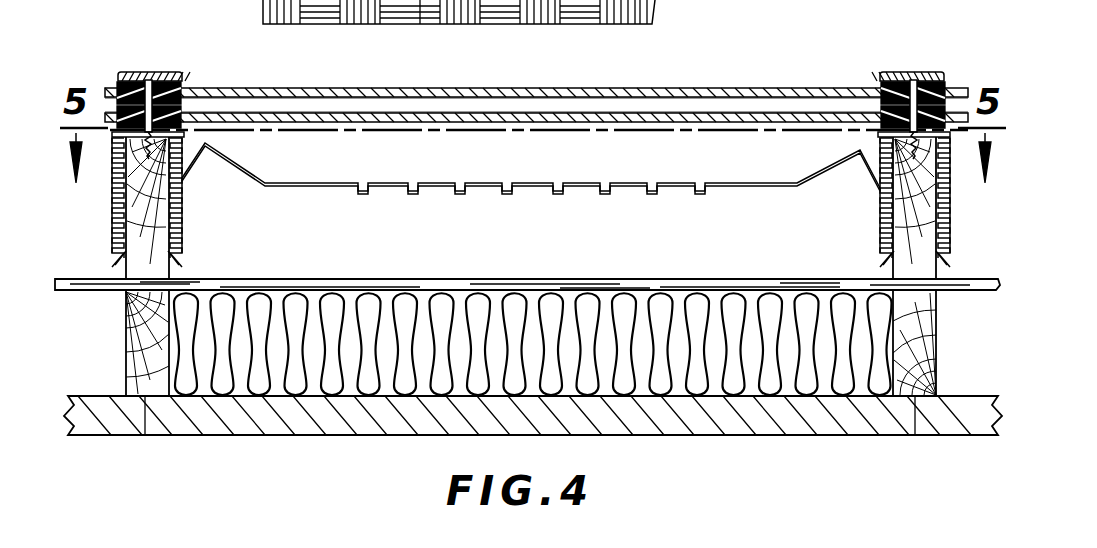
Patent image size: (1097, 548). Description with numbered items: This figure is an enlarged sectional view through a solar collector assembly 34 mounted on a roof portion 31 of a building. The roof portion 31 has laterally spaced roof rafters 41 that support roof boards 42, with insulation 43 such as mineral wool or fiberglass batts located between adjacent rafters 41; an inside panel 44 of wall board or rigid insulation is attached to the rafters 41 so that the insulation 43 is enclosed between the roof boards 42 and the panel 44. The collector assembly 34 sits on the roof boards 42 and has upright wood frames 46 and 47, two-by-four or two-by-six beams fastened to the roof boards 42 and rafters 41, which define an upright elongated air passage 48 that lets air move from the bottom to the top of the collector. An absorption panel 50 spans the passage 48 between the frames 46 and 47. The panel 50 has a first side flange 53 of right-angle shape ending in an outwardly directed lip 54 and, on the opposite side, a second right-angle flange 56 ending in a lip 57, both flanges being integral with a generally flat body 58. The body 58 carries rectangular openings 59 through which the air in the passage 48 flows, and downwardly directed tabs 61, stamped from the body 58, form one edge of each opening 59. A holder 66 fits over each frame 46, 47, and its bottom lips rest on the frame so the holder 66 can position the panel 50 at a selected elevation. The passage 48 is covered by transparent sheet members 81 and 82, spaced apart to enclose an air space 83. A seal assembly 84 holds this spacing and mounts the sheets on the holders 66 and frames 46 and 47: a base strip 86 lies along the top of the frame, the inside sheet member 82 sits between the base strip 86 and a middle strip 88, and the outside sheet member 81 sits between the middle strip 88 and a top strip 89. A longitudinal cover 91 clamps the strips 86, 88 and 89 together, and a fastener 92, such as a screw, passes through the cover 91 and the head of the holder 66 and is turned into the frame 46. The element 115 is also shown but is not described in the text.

The roof portion 31 is at (297, 447).
The solar collector assembly 34 is at (277, 64).
The roof rafters 41 is at (135, 342).
The roof boards 42 is at (775, 280).
The insulation 43 is at (770, 372).
The inside panel 44 is at (878, 432).
The upright frame 46 is at (178, 252).
The upright frame 47 is at (888, 258).
The air passage 48 is at (532, 254).
The absorption panel 50 is at (768, 181).
The first side flange 53 is at (257, 176).
The lip 54 is at (185, 178).
The second right angle flange 56 is at (838, 165).
The lip 57 is at (878, 190).
The body 58 is at (573, 182).
The openings 59 is at (414, 182).
The tabs 61 is at (413, 192).
The holder 66 is at (110, 187).
The outside sheet member 81 is at (368, 89).
The inside sheet member 82 is at (457, 113).
The air space 83 is at (555, 106).
The seal assembly 84 is at (191, 82).
The base strip 86 is at (192, 131).
The middle strip 88 is at (118, 102).
The top strip 89 is at (124, 76).
The cover 91 is at (180, 78).
The fastener 92 is at (150, 73).
The roof member 115 is at (578, 3).